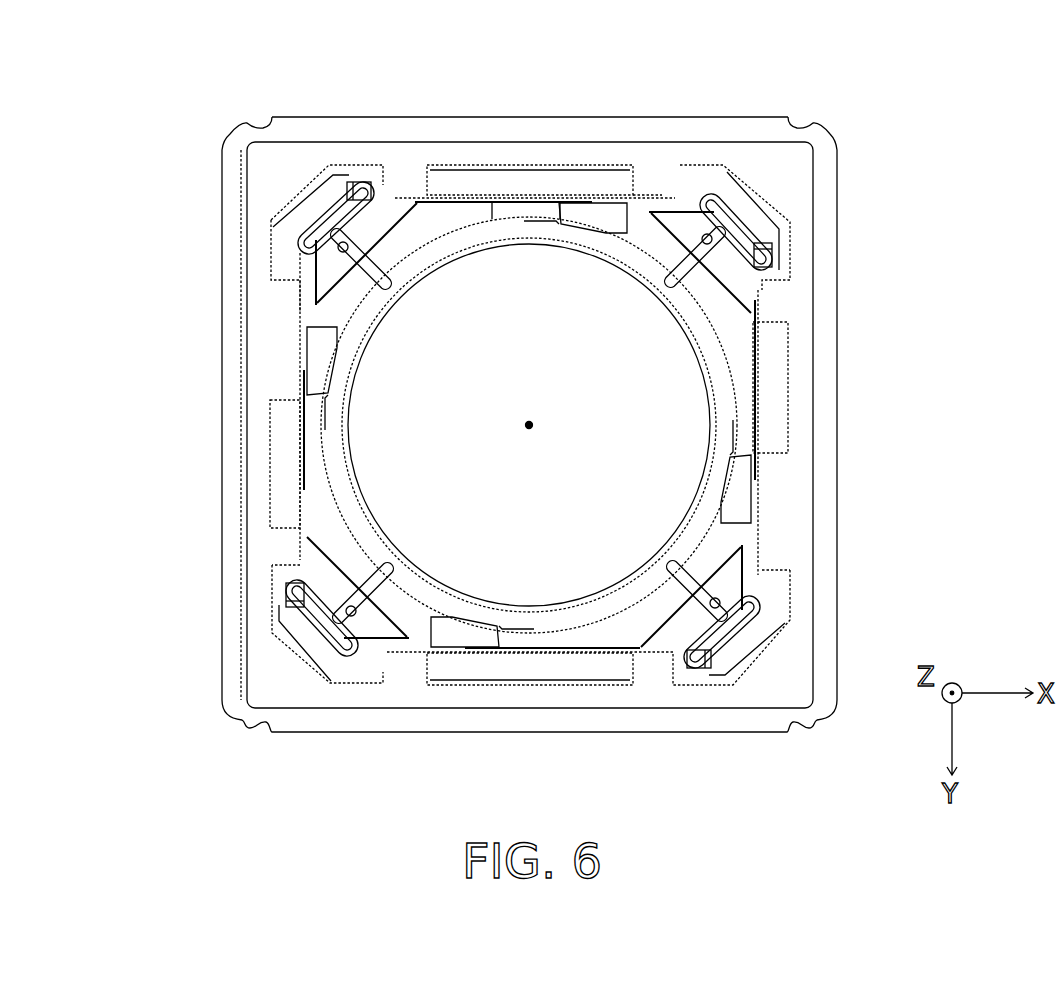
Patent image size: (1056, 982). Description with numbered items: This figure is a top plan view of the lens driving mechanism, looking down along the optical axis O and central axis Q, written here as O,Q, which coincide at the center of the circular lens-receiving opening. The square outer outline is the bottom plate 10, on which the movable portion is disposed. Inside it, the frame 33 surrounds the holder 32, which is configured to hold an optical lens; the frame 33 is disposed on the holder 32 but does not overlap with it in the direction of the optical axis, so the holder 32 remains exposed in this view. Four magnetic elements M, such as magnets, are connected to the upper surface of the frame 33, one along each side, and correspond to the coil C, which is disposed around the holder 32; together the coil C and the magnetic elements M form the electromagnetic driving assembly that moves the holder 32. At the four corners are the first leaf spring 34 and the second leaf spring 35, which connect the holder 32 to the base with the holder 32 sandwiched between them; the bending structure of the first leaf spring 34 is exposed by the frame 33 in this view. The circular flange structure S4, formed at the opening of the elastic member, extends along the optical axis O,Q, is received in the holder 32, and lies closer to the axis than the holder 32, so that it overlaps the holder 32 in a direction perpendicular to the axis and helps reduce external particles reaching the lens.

The bottom plate 10 is at (388, 132).
The frame 33 is at (790, 513).
The flange structure S4 is at (717, 420).
The optical axis / central axis O,Q is at (533, 425).
The magnetic elements M is at (530, 185).
The holder 32 is at (310, 352).
The coil C is at (645, 223).
The first leaf spring 34 is at (795, 602).
The second leaf spring 35 is at (300, 657).